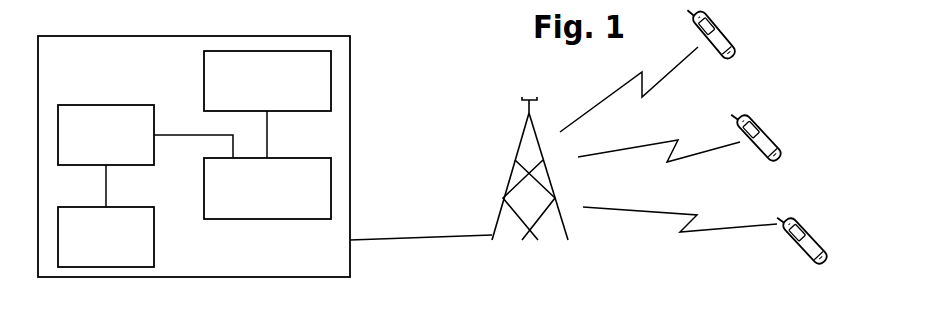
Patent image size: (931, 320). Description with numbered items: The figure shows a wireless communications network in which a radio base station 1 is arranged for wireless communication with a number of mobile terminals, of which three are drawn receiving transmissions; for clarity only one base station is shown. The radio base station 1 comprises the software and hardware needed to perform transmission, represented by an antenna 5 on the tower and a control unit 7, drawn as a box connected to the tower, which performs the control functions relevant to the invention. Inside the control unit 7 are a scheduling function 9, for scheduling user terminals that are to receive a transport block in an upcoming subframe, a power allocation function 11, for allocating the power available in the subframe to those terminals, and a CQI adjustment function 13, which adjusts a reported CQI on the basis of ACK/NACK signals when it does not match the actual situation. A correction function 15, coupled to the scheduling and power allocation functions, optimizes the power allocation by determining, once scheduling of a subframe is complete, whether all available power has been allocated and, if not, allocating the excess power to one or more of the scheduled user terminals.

The radio base station 1 is at (512, 172).
The antenna 5 is at (522, 100).
The control unit 7 is at (102, 84).
The scheduling function 9 is at (259, 91).
The power allocation function 11 is at (88, 148).
The CQI adjustment function 13 is at (88, 250).
The correction function 15 is at (283, 198).